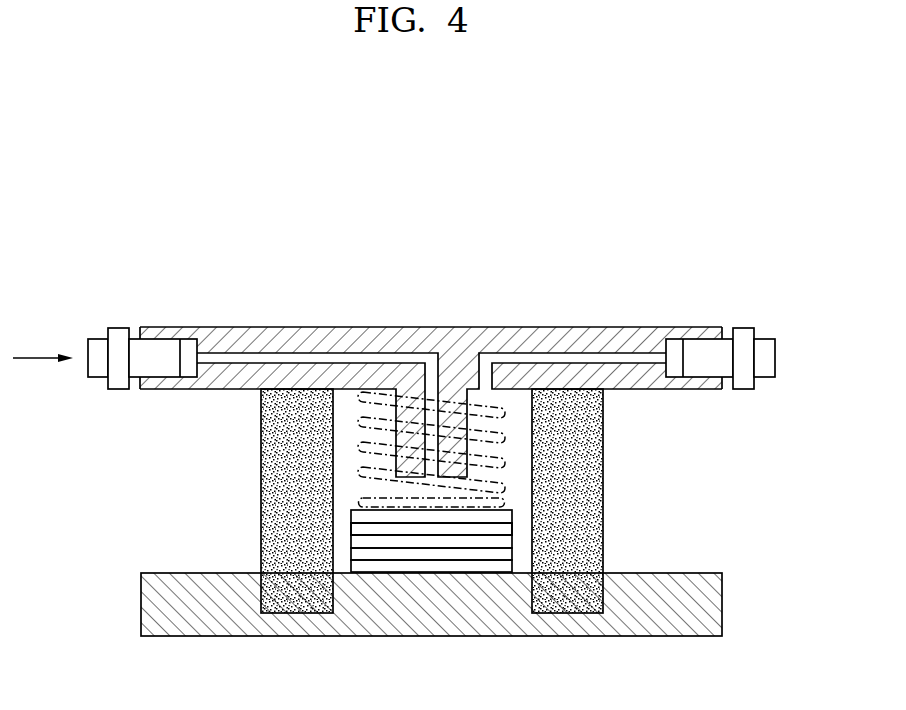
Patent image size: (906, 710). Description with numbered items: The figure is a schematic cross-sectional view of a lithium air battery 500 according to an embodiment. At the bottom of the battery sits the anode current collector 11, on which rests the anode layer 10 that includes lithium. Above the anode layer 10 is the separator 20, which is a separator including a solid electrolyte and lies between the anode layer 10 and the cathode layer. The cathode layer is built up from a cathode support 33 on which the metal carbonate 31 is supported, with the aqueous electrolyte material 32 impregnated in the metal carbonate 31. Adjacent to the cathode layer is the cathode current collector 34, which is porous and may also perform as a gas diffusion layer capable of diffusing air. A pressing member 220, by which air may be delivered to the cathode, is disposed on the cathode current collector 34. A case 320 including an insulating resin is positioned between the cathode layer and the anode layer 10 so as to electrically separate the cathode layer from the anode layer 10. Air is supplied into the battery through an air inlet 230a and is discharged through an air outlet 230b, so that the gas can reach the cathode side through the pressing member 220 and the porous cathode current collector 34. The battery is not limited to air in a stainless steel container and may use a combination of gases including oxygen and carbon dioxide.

The lithium air battery 500 is at (412, 426).
The air inlet 230a is at (97, 378).
The air outlet 230b is at (763, 378).
The pressing member 220 is at (507, 440).
The case 320 is at (261, 488).
The cathode current collector 34 is at (512, 516).
The metal carbonate 31 is at (512, 529).
The aqueous electrolyte material 32 is at (431, 529).
The cathode support 33 is at (512, 541).
The separator 20 is at (512, 554).
The anode layer 10 is at (512, 566).
The anode current collector 11 is at (141, 606).